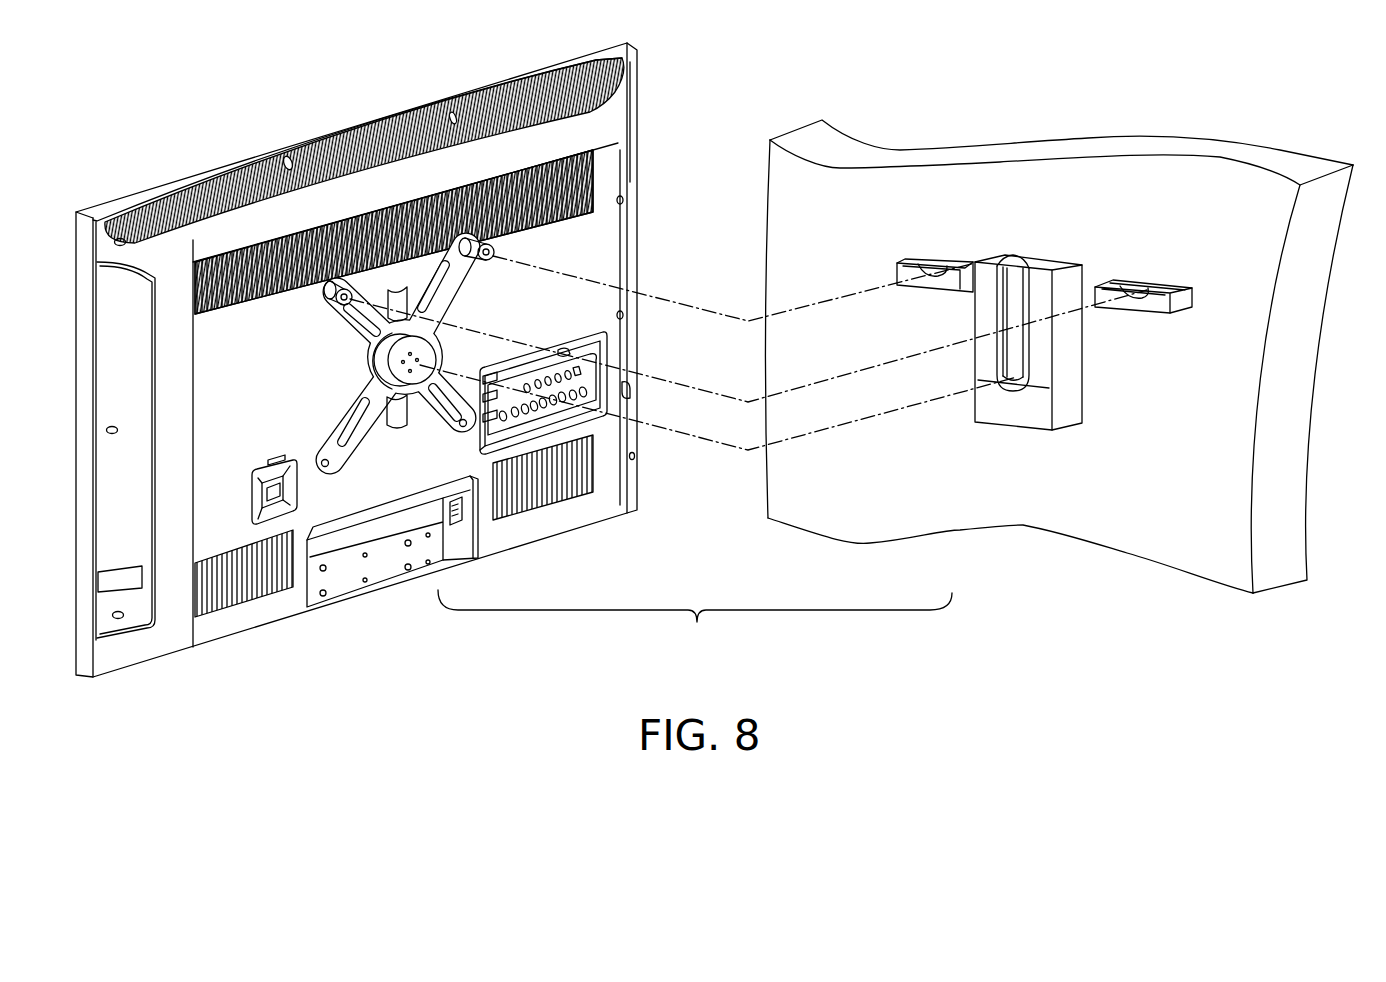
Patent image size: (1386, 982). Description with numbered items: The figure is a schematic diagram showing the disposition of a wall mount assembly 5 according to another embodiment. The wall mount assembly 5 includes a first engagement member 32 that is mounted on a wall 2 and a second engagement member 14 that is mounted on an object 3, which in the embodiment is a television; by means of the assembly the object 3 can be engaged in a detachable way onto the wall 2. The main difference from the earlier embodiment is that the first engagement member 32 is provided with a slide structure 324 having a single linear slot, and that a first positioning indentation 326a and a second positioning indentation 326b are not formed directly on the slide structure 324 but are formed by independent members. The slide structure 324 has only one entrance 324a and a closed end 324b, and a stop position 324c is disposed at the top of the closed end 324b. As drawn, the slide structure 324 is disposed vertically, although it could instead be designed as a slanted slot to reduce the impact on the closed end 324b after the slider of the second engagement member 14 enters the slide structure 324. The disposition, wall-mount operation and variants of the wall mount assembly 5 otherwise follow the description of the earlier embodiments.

The wall 2 is at (1275, 163).
The object 3 is at (333, 207).
The wall mount assembly 5 is at (695, 623).
The second engagement member 14 is at (412, 446).
The first engagement member 32 is at (1043, 395).
The slide structure 324 is at (1030, 348).
The entrance 324a is at (1013, 276).
The closed end 324b is at (1032, 413).
The stop position 324c is at (1024, 379).
The first positioning indentation 326a is at (1138, 288).
The second positioning indentation 326b is at (937, 267).